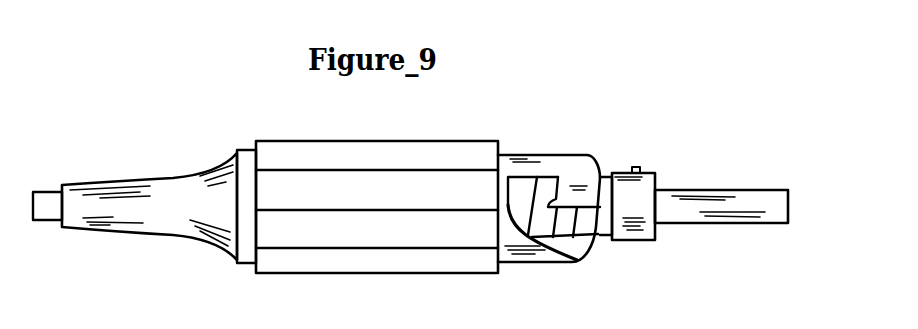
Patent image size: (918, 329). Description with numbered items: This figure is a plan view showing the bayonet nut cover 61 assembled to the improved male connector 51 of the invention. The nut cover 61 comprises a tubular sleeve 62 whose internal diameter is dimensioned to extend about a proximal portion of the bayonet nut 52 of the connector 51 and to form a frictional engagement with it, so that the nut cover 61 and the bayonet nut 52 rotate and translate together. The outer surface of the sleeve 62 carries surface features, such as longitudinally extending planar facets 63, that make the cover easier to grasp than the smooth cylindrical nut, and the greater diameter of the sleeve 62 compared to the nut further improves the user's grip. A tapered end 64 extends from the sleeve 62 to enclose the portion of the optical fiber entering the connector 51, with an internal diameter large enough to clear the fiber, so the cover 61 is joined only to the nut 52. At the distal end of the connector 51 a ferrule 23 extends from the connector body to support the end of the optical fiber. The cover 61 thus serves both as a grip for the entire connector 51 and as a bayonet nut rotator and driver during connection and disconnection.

The bayonet nut cover 61 is at (196, 117).
The tapered end 64 is at (166, 175).
The tubular sleeve 62 is at (377, 235).
The ribs 63 is at (325, 193).
The bayonet nut 52 is at (542, 157).
The male connector 51 is at (619, 126).
The ferrule 23 is at (740, 225).